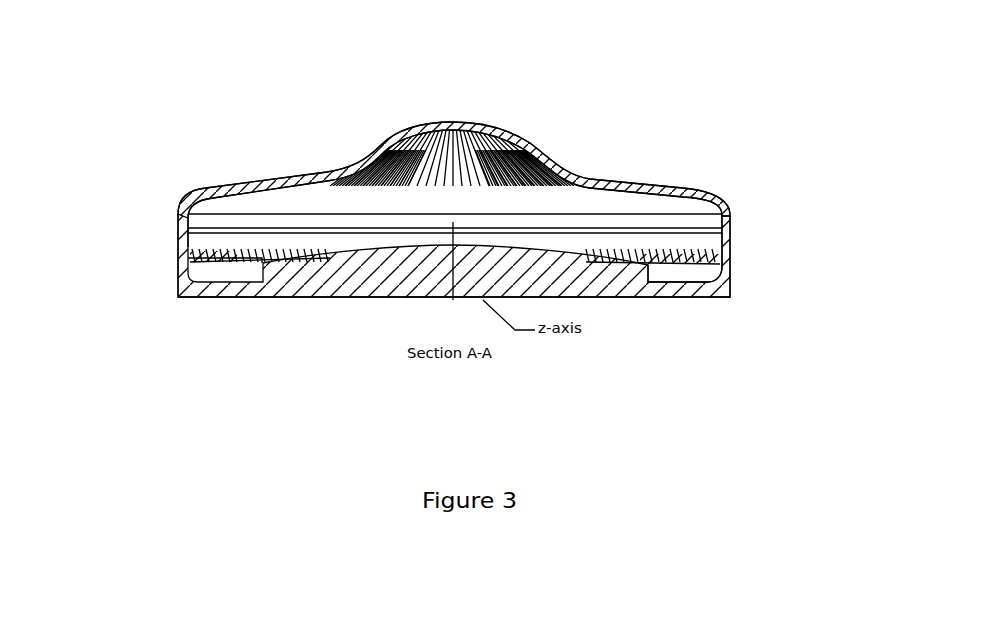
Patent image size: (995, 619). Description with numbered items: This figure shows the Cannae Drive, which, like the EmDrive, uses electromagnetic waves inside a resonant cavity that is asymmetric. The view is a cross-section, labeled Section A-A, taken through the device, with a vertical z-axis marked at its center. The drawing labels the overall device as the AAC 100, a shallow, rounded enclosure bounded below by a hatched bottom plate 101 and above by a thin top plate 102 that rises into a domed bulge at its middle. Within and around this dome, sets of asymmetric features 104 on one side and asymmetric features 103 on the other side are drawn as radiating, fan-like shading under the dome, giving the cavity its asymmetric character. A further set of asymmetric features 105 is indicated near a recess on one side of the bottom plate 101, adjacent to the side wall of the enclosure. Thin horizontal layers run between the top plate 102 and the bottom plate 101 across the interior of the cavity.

The AAC (asymmetric acoustic chamber) 100 is at (732, 230).
The Bottom Plate 101 is at (310, 297).
The Top Plate 102 is at (270, 178).
The Asymmetric Features 103 is at (520, 152).
The Asymmetric Features 104 is at (377, 150).
The Asymmetric features 105 is at (800, 405).